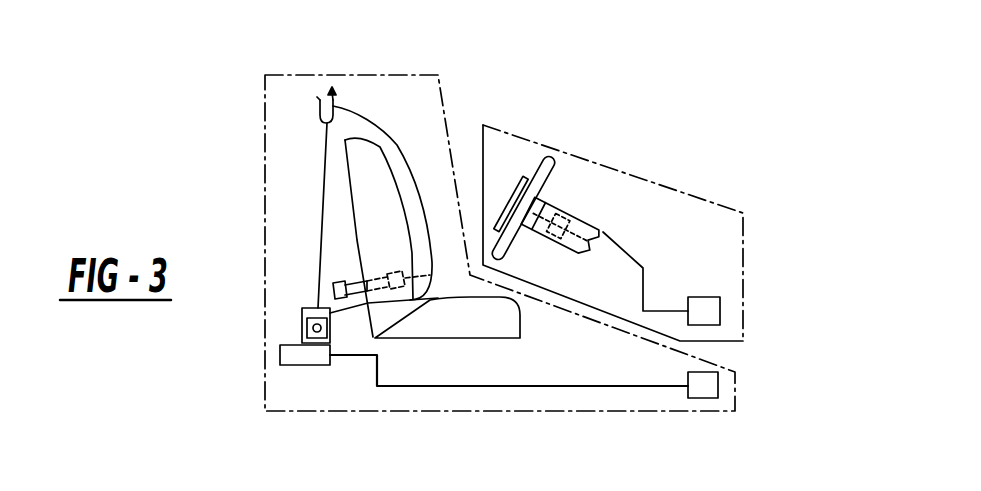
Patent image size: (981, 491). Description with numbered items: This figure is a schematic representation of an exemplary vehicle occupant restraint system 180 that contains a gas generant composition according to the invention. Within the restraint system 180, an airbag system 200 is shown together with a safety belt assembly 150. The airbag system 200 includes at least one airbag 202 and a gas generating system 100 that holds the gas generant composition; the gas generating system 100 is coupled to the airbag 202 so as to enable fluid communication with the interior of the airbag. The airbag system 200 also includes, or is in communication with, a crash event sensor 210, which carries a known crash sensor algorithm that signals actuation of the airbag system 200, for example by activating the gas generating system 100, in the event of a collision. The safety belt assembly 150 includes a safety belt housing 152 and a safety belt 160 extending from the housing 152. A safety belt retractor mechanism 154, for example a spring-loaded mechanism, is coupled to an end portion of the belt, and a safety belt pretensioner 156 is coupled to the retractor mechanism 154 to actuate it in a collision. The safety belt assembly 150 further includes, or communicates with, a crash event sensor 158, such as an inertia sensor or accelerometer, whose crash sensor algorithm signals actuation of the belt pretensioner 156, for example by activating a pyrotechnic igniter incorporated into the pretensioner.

The gas generating system 100 is at (559, 219).
The safety belt assembly 150 is at (382, 72).
The safety belt housing 152 is at (306, 328).
The safety belt retractor mechanism 154 is at (302, 325).
The safety belt pretensioner 156 is at (297, 365).
The crash event sensor 158 is at (702, 398).
The safety belt 160 is at (361, 118).
The vehicle occupant restraint system 180 is at (603, 50).
The airbag system 200 is at (688, 201).
The airbag 202 is at (529, 201).
The crash event sensor 210 is at (702, 297).